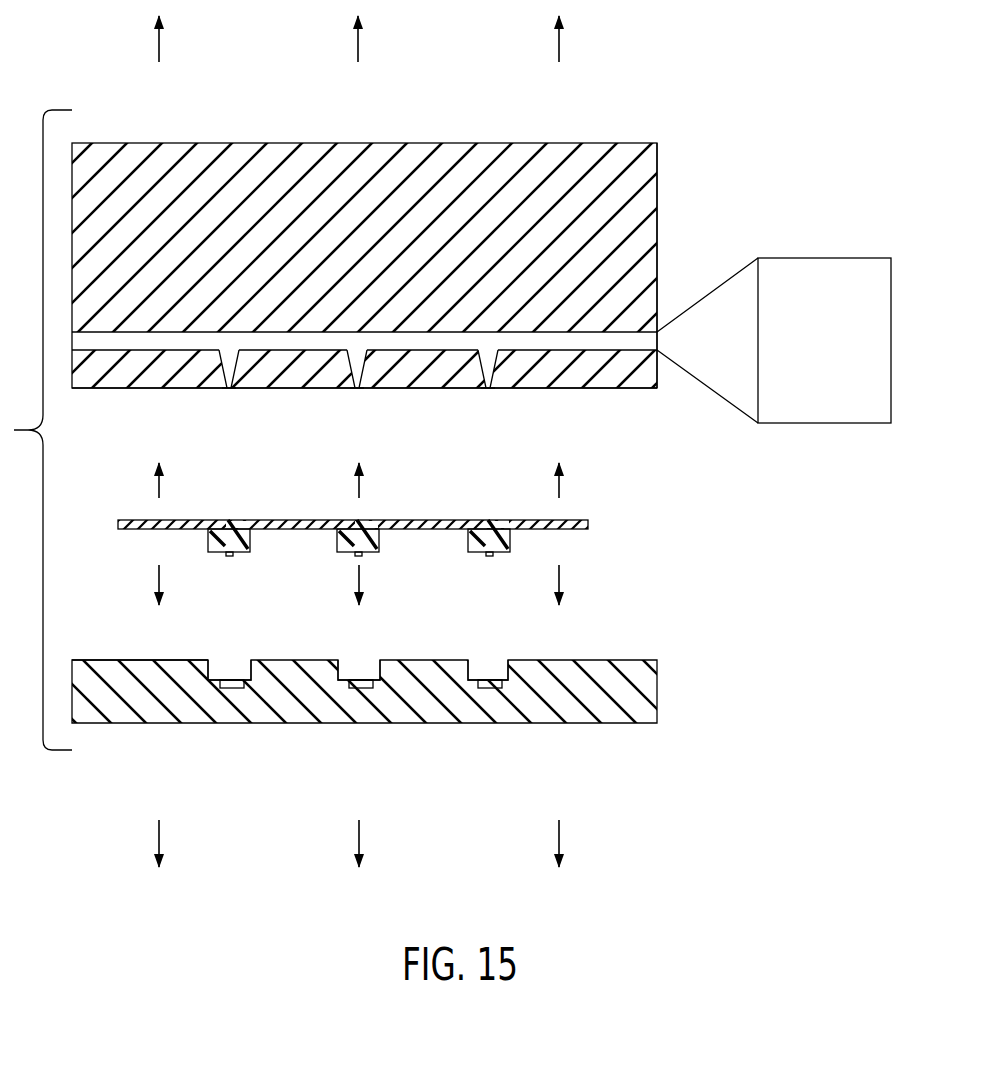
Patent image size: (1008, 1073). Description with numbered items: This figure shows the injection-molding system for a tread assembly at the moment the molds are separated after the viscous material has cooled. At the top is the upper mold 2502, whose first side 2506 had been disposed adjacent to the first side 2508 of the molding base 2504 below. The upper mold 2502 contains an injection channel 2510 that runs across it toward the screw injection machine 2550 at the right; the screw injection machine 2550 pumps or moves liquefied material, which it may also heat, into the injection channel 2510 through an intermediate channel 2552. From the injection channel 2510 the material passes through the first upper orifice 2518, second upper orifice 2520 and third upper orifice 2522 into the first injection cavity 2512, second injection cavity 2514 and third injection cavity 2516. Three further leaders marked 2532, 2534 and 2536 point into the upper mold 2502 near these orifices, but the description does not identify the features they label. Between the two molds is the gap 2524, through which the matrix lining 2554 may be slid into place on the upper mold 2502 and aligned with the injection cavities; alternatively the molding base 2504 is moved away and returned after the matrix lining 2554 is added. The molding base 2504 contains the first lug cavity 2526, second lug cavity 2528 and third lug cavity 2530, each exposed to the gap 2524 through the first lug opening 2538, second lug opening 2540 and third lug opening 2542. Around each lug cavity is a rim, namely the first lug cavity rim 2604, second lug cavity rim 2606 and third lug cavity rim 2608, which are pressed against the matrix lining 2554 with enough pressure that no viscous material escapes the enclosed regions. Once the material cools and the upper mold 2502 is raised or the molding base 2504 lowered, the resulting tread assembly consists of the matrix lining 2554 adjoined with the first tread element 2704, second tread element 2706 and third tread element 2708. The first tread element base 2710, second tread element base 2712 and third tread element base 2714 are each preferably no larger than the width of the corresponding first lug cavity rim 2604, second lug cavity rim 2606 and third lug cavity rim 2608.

The upper mold 2502 is at (222, 142).
The molding base 2504 is at (87, 724).
The first side of upper mold 2506 is at (621, 407).
The first side of molding base 2508 is at (116, 648).
The injection channel 2510 is at (657, 330).
The first injection cavity 2512 is at (226, 366).
The second injection cavity 2514 is at (356, 366).
The third injection cavity 2516 is at (488, 366).
The first upper orifice 2518 is at (226, 346).
The second upper orifice 2520 is at (357, 346).
The third upper orifice 2522 is at (489, 346).
The gap 2524 is at (664, 601).
The first lug cavity 2526 is at (219, 689).
The second lug cavity 2528 is at (371, 689).
The third lug cavity 2530 is at (503, 689).
The first slot wall 2532 is at (231, 386).
The second slot wall 2534 is at (357, 386).
The feed channel 2536 is at (600, 338).
The first lug opening 2538 is at (233, 688).
The second lug opening 2540 is at (345, 688).
The third lug opening 2542 is at (477, 688).
The screw injection machine 2550 is at (828, 265).
The intermediate channel 2552 is at (718, 302).
The matrix lining 2554 is at (590, 524).
The first lug cavity rim 2604 is at (208, 659).
The second lug cavity rim 2606 is at (338, 658).
The third lug cavity rim 2608 is at (470, 658).
The first tread element 2704 is at (219, 522).
The second tread element 2706 is at (340, 546).
The third tread element 2708 is at (510, 540).
The first tread element base 2710 is at (212, 552).
The second tread element base 2712 is at (376, 550).
The third tread element base 2714 is at (476, 556).